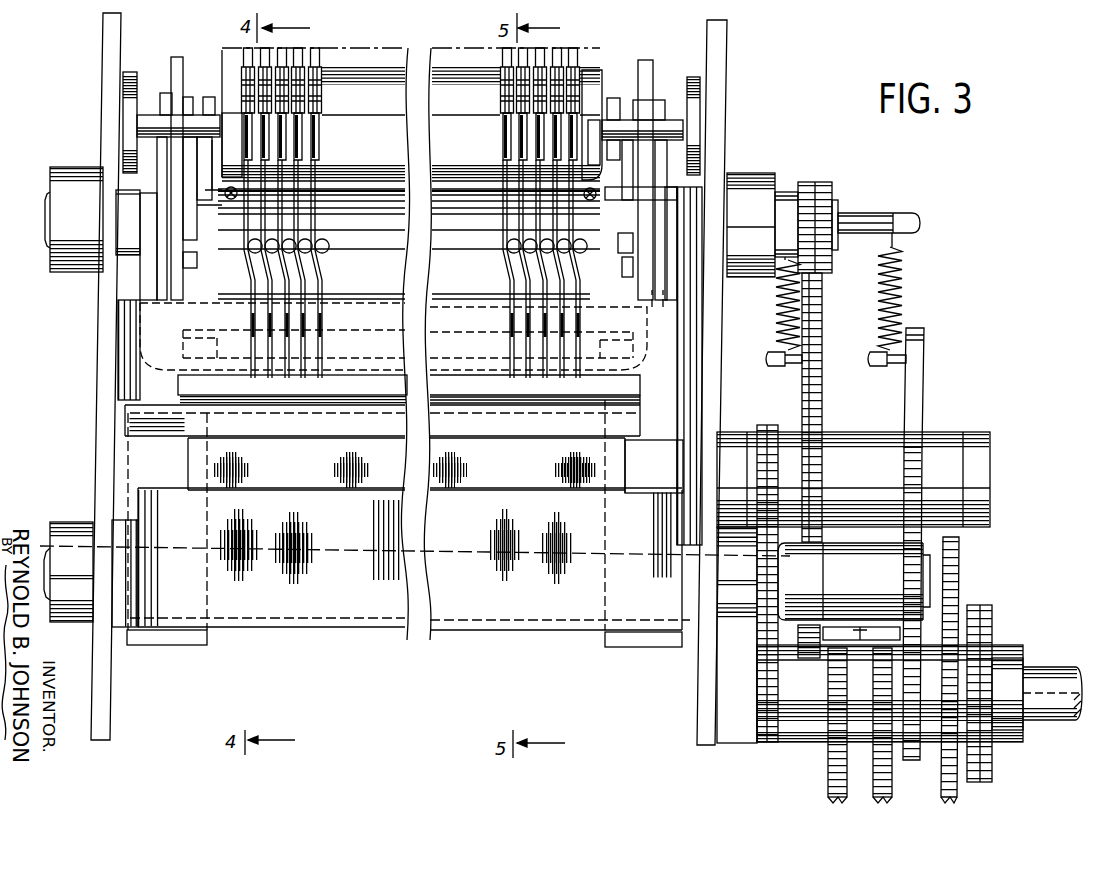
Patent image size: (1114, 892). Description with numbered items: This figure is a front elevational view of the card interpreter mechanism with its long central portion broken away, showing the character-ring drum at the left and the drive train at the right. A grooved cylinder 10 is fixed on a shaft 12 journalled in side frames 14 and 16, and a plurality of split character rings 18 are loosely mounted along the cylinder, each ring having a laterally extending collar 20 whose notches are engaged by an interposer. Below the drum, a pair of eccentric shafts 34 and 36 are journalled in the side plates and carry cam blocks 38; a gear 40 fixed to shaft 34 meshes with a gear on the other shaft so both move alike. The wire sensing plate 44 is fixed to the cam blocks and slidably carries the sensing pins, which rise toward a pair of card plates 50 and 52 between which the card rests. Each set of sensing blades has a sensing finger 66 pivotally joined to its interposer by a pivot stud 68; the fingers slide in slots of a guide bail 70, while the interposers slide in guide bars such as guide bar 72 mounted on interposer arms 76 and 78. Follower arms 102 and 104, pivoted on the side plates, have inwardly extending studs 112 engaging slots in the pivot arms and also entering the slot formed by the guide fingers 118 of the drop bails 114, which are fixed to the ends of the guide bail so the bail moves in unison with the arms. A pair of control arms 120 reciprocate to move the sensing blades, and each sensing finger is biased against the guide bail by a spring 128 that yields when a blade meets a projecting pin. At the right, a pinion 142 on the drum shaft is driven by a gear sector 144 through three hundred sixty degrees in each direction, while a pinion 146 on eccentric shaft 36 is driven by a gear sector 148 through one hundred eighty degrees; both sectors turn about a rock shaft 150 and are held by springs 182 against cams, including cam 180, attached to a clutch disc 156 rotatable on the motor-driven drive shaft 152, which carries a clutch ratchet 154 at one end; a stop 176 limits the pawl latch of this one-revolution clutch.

The grooved cylinder 10 is at (590, 72).
The shaft 12 is at (837, 200).
The side frame 14 is at (107, 50).
The side frame 16 is at (722, 82).
The split character ring 18 is at (573, 52).
The collar 20 is at (243, 66).
The eccentric shaft 34 is at (780, 577).
The eccentric shaft 36 is at (931, 577).
The cam block 38 is at (328, 603).
The gear 40 is at (768, 717).
The wire sensing plate 44 is at (307, 472).
The bottom card plate 50 is at (128, 407).
The upper card plate 52 is at (188, 385).
The sensing finger 66 is at (305, 159).
The pivot stud 68 is at (315, 128).
The guide bail 70 is at (375, 205).
The guide bar 72 is at (372, 127).
The interposer arm 76 is at (208, 98).
The interposer arm 78 is at (611, 98).
The follower arm 102 is at (130, 72).
The follower arm 104 is at (690, 77).
The stud 112 is at (143, 120).
The drop bail 114 is at (178, 58).
The guide finger 118 is at (180, 113).
The control arm 120 is at (152, 260).
The spring 128 is at (320, 238).
The pinion 142 is at (817, 182).
The gear sector 144 is at (813, 403).
The pinion 146 is at (914, 620).
The gear sector 148 is at (915, 403).
The rock shaft 150 is at (945, 442).
The drive shaft 152 is at (1046, 673).
The clutch ratchet 154 is at (988, 635).
The clutch disc 156 is at (956, 555).
The stop 176 is at (840, 752).
The cam 180 is at (882, 757).
The spring 182 is at (900, 293).